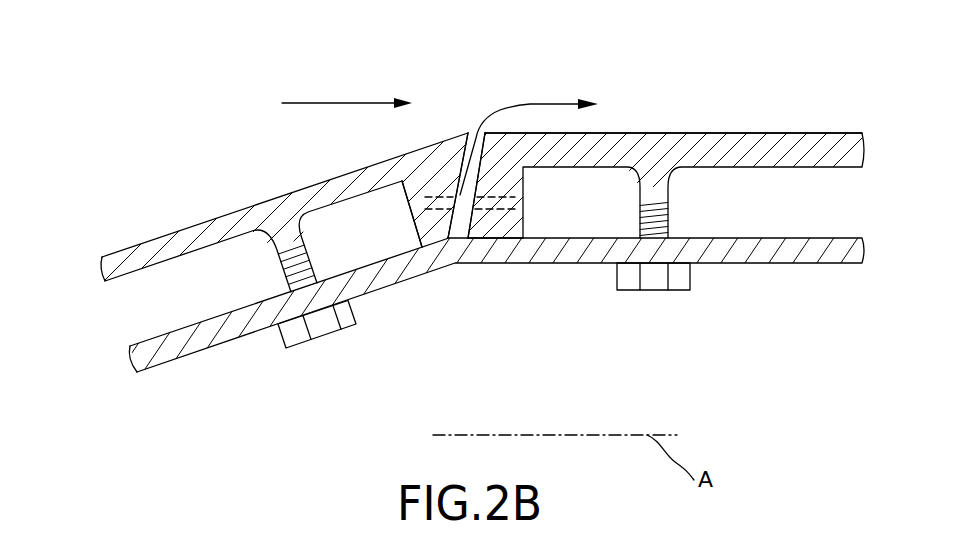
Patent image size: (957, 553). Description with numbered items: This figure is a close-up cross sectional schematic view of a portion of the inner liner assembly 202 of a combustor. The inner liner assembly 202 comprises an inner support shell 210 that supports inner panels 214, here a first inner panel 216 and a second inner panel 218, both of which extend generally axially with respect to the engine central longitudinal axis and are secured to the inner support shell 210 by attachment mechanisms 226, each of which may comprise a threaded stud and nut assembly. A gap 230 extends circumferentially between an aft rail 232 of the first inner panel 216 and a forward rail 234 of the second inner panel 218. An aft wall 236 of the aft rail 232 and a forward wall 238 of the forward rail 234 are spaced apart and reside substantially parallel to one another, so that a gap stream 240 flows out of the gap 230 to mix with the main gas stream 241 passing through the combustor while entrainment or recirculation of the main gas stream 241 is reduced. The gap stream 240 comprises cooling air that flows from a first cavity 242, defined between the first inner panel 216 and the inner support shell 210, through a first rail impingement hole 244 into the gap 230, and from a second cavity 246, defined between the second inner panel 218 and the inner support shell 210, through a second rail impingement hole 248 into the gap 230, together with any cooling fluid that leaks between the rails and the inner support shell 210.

The inner liner assembly 202 is at (138, 165).
The inner support shell 210 is at (205, 350).
The inner panels 214 is at (683, 133).
The first inner panel 216 is at (218, 216).
The second inner panel 218 is at (777, 133).
The attachment mechanism 226 is at (356, 325).
The gap 230 is at (472, 98).
The aft rail 232 is at (422, 249).
The forward rail 234 is at (500, 222).
The aft wall 236 is at (450, 238).
The forward wall 238 is at (470, 240).
The gap stream 240 is at (537, 105).
The main gas stream 241 is at (303, 103).
The first cavity 242 is at (235, 290).
The first rail impingement hole 244 is at (408, 204).
The second cavity 246 is at (771, 207).
The second rail impingement hole 248 is at (512, 208).